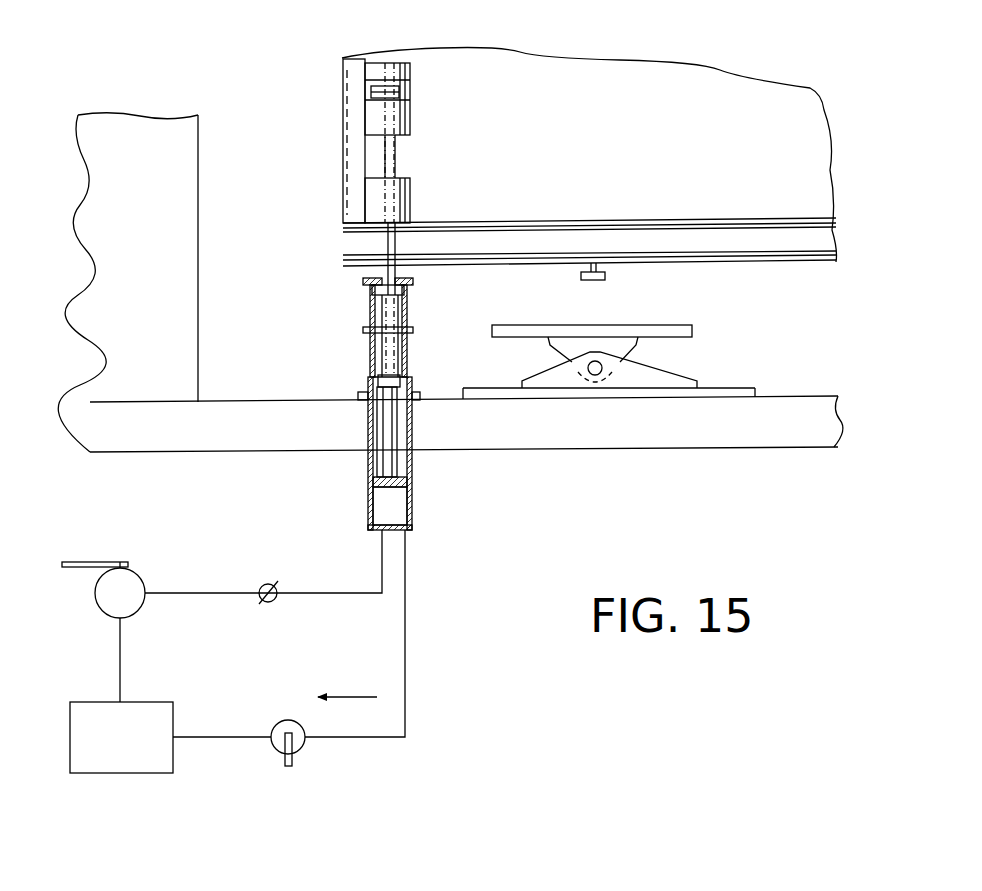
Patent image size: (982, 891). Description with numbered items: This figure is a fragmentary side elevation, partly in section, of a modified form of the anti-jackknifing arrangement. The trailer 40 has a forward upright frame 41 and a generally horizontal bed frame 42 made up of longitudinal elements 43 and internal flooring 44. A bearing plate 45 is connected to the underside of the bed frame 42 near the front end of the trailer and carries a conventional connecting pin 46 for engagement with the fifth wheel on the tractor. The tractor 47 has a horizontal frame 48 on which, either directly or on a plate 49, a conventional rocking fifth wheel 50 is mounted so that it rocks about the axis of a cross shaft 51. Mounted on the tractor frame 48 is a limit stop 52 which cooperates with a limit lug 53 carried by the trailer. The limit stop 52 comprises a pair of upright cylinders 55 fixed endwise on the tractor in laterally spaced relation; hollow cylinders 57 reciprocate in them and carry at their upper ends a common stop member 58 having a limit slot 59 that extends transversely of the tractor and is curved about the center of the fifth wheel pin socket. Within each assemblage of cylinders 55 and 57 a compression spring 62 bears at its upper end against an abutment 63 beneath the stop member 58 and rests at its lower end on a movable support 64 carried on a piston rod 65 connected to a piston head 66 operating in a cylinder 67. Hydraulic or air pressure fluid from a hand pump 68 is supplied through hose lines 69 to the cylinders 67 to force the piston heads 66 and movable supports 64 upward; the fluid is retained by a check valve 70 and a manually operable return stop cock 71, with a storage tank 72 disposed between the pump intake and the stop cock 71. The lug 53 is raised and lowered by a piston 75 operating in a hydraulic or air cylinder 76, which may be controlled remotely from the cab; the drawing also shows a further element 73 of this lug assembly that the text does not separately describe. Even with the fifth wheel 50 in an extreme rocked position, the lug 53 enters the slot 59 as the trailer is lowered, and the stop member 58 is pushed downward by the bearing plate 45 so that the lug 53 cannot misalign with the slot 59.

The trailer 40 is at (370, 124).
The forward upright frame 41 is at (348, 66).
The bed frame 42 is at (795, 185).
The longitudinal elements 43 is at (810, 238).
The internal flooring 44 is at (612, 222).
The bearing plate 45 is at (705, 264).
The connecting pin 46 is at (607, 277).
The tractor 47 is at (810, 392).
The horizontal frame 48 is at (820, 434).
The plate 49 is at (708, 393).
The rocking fifth wheel 50 is at (692, 330).
The cross shaft 51 is at (597, 372).
The limit stop 52 is at (375, 331).
The limit lug 53 is at (385, 250).
The upright cylinders 55 is at (368, 473).
The hollow cylinders 57 is at (370, 318).
The stop member 58 is at (415, 283).
The limit slot 59 is at (393, 283).
The compression spring 62 is at (406, 300).
The abutment 63 is at (372, 288).
The movable support 64 is at (383, 380).
The piston rod 65 is at (390, 430).
The piston head 66 is at (385, 487).
The cylinder 67 is at (398, 505).
The hand pump 68 is at (110, 607).
The hose lines 69 is at (365, 597).
The check valve 70 is at (262, 600).
The return stop cock 71 is at (297, 752).
The storage tank 72 is at (152, 762).
The lower block 73 is at (373, 195).
The piston 75 is at (400, 93).
The cylinder 76 is at (375, 120).